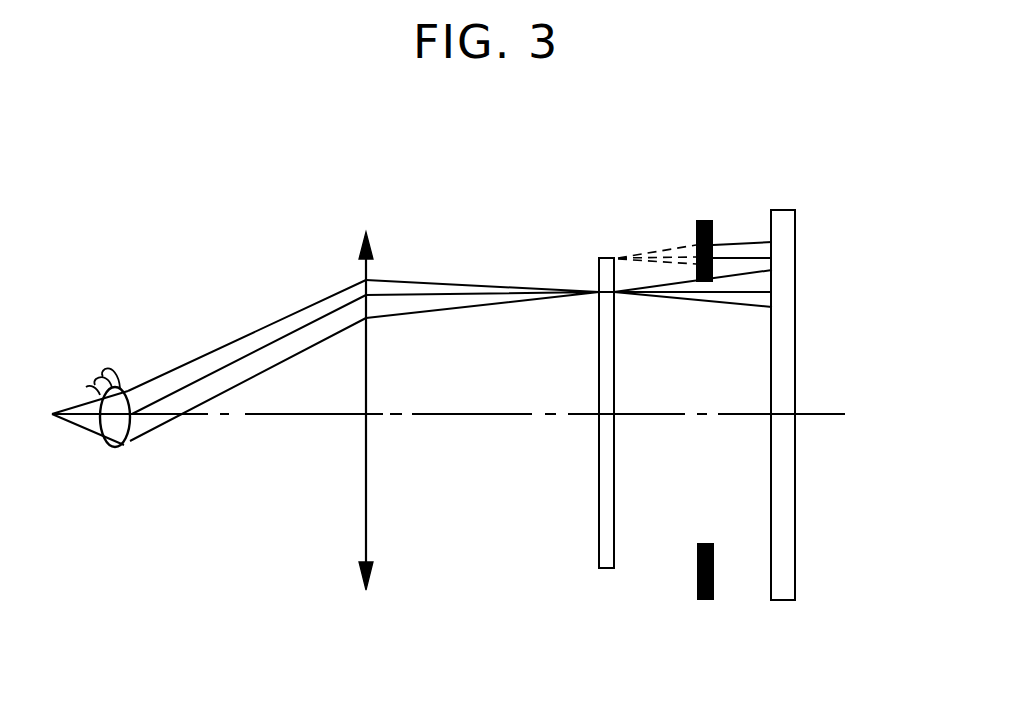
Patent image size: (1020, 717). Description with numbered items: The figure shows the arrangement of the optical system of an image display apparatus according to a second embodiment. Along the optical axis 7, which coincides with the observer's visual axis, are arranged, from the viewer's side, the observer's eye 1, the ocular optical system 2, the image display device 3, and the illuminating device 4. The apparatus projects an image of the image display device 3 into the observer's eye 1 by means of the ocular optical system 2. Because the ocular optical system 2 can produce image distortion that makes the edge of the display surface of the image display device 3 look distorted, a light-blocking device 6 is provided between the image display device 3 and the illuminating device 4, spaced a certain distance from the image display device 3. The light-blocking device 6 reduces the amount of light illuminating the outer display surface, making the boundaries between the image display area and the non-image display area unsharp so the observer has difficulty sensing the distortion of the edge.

The observer's eye 1 is at (110, 349).
The ocular optical system 2 is at (355, 495).
The image display device 3 is at (607, 242).
The illuminating device 4 is at (811, 256).
The light-blocking device 6 is at (710, 208).
The optical axis 7 is at (513, 428).